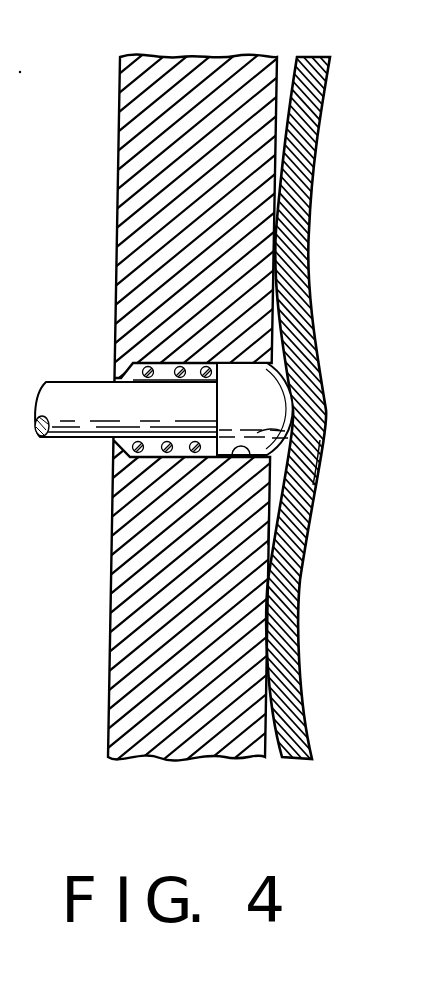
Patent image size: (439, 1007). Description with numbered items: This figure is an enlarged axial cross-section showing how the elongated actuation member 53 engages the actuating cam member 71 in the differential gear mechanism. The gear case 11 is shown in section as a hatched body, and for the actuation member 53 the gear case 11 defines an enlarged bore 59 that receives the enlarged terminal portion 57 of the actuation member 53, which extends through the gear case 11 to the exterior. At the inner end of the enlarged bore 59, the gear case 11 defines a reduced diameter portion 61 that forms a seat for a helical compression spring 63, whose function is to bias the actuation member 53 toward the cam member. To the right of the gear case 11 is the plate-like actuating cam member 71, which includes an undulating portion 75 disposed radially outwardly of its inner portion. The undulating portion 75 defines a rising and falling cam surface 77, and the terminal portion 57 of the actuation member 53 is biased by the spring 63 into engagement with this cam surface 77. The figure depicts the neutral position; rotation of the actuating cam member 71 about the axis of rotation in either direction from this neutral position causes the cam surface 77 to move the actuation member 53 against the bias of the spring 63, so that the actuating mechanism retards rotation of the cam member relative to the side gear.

The gear case 11 is at (207, 92).
The actuating cam member 71 is at (316, 214).
The cam surface 77 is at (281, 308).
The elongated actuation member 53 is at (78, 406).
The helical compression spring 63 is at (152, 361).
The reduced diameter portion 61 is at (116, 444).
The undulating portion 75 is at (306, 377).
The enlarged bore 59 is at (240, 459).
The terminal portion 57 is at (320, 461).